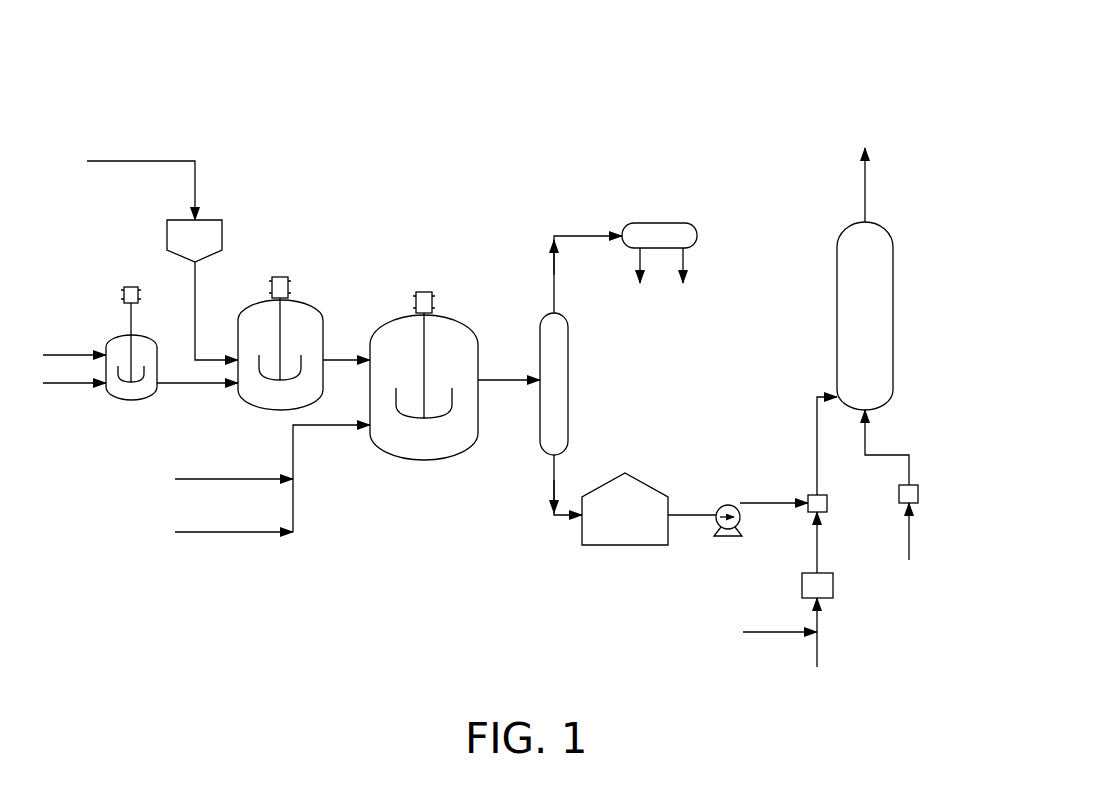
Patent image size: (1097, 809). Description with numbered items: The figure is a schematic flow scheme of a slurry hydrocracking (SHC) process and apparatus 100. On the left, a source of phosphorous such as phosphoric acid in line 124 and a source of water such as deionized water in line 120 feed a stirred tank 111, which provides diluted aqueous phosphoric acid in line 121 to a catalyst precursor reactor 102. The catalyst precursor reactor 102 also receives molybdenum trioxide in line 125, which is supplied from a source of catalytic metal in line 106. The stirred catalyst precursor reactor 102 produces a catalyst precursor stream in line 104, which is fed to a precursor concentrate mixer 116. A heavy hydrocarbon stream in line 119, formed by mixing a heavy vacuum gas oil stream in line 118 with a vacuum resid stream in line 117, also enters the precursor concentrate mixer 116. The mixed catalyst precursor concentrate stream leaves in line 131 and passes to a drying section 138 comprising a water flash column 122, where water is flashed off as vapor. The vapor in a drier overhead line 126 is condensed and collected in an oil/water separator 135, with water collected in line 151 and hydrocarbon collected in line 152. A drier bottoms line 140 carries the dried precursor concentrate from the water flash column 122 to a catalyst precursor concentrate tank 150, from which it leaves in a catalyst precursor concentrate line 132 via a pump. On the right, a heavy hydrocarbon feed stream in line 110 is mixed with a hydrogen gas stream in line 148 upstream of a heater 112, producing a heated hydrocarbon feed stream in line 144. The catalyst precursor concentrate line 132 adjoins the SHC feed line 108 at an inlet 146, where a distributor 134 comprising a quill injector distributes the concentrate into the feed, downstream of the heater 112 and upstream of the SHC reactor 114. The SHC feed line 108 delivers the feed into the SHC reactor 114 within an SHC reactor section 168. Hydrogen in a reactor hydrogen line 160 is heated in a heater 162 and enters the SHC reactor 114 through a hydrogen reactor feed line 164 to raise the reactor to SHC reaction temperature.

The SHC process and apparatus 100 is at (442, 94).
The catalyst precursor reactor 102 is at (305, 270).
The catalyst precursor stream 104 is at (340, 363).
The source of catalytic metal line 106 is at (131, 165).
The SHC feed line 108 is at (817, 415).
The heavy hydrocarbon feed stream line 110 is at (820, 645).
The stirred tank 111 is at (115, 335).
The heater 112 is at (808, 573).
The SHC reactor 114 is at (837, 315).
The precursor concentrate mixer 116 is at (438, 270).
The vacuum resid stream line 117 is at (207, 532).
The heavy vacuum gas oil stream line 118 is at (193, 477).
The heavy hydrocarbon stream line 119 is at (297, 462).
The source of water line 120 is at (73, 352).
The diluted aqueous phosphoric acid line 121 is at (195, 385).
The water flash column 122 is at (568, 343).
The source of phosphorous line 124 is at (62, 387).
The molybdenum trioxide line 125 is at (193, 315).
The drier overhead line 126 is at (554, 278).
The mixed catalyst precursor concentrate stream line 131 is at (504, 380).
The catalyst precursor concentrate line 132 is at (693, 514).
The distributor 134 is at (812, 495).
The oil/water separator 135 is at (660, 222).
The drying section 138 is at (585, 207).
The drier bottoms line 140 is at (554, 478).
The heated hydrocarbon feed stream line 144 is at (820, 560).
The inlet 146 is at (808, 512).
The hydrogen gas stream line 148 is at (745, 632).
The catalyst precursor concentrate tank 150 is at (651, 488).
The water line 151 is at (637, 257).
The hydrocarbon line 152 is at (688, 257).
The reactor hydrogen line 160 is at (910, 550).
The heater 162 is at (899, 492).
The hydrogen reactor feed line 164 is at (893, 455).
The SHC reactor section 168 is at (798, 177).